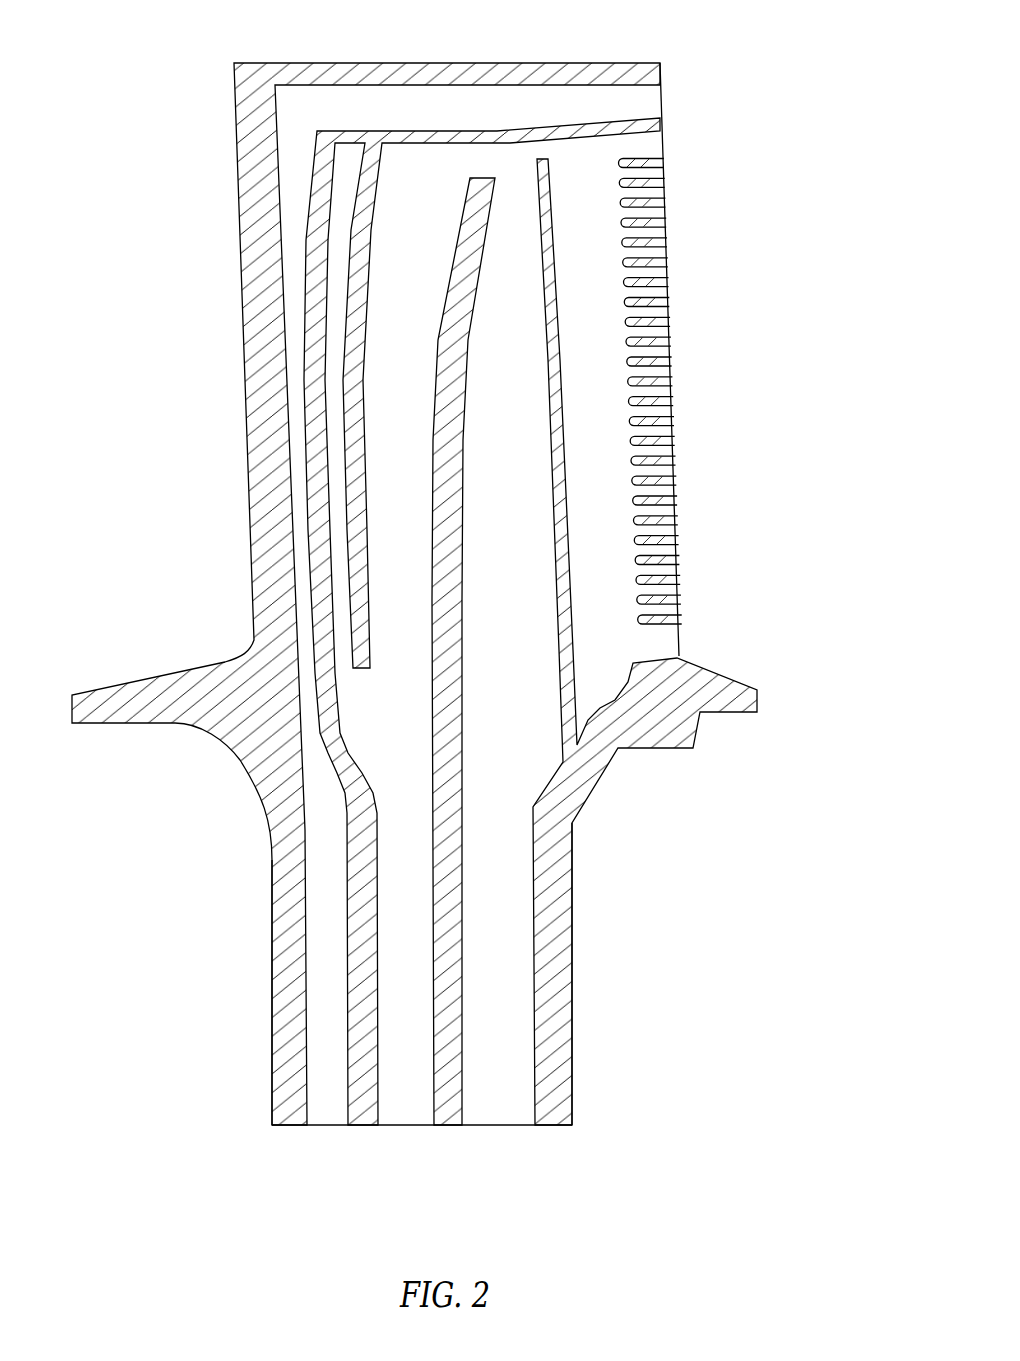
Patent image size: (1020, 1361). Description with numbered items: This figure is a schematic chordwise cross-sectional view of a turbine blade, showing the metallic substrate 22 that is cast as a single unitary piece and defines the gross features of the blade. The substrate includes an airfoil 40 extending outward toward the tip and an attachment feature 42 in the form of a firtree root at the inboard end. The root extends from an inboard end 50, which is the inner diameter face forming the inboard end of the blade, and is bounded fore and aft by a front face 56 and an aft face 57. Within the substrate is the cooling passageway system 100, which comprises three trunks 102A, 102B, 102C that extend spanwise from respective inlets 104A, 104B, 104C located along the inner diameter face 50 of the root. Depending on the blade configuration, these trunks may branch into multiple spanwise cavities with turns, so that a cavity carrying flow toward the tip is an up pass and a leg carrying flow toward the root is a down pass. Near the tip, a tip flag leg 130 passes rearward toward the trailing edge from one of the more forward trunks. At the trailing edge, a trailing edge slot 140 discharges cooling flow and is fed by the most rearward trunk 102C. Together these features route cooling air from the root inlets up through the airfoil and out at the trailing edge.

The metallic substrate 22 is at (663, 697).
The airfoil 40 is at (135, 349).
The attachment feature 42 is at (715, 907).
The inboard end 50 is at (287, 1128).
The front face 56 is at (271, 972).
The aft face 57 is at (573, 850).
The cooling passageway system 100 is at (503, 889).
The trunk 102A is at (330, 1023).
The trunk 102B is at (408, 977).
The trunk 102C is at (488, 1045).
The inlet 104A is at (322, 1133).
The inlet 104B is at (403, 1133).
The inlet 104C is at (497, 1133).
The tip flag leg 130 is at (509, 110).
The trailing edge slot 140 is at (650, 190).